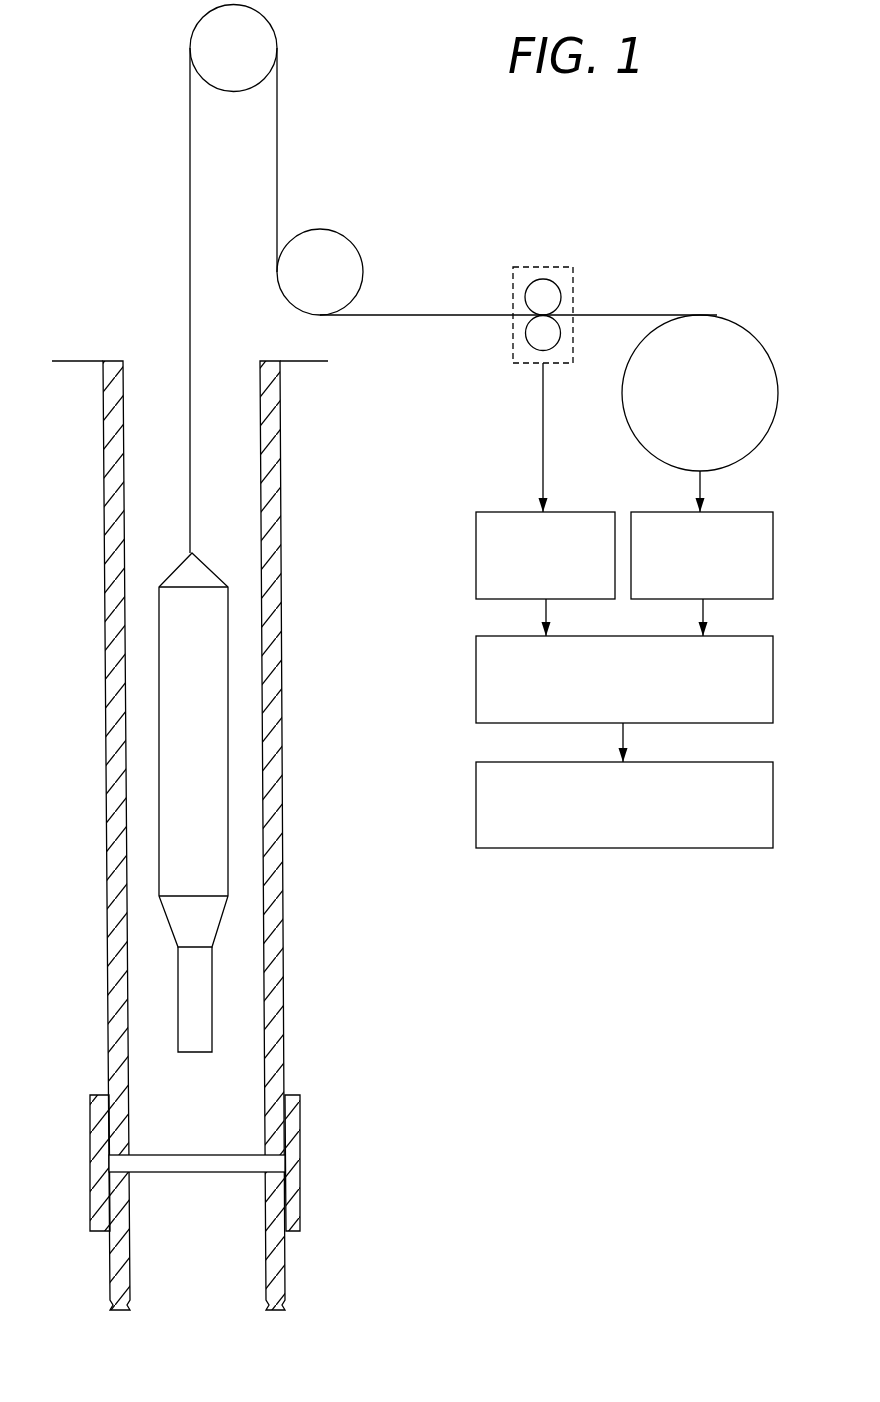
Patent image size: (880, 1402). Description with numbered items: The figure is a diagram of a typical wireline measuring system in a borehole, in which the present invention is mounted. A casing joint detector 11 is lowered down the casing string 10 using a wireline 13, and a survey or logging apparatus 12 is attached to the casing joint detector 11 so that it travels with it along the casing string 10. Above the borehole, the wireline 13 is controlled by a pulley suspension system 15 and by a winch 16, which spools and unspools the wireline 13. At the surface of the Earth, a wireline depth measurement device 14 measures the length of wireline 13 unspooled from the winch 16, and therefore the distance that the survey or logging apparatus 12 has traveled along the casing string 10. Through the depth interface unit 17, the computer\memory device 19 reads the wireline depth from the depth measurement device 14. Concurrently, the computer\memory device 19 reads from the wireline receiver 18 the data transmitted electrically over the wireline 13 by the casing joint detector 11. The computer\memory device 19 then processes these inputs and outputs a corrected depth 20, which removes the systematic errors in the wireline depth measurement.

The casing string 10 is at (278, 448).
The casing joint detector 11 is at (230, 707).
The survey or logging apparatus 12 is at (213, 997).
The wireline 13 is at (432, 313).
The wireline depth measurement device 14 is at (572, 268).
The pulley suspension system 15 is at (285, 28).
The winch 16 is at (717, 315).
The depth interface unit 17 is at (474, 508).
The wireline receiver 18 is at (628, 508).
The computer\memory device 19 is at (477, 633).
The corrected depth 20 is at (477, 760).